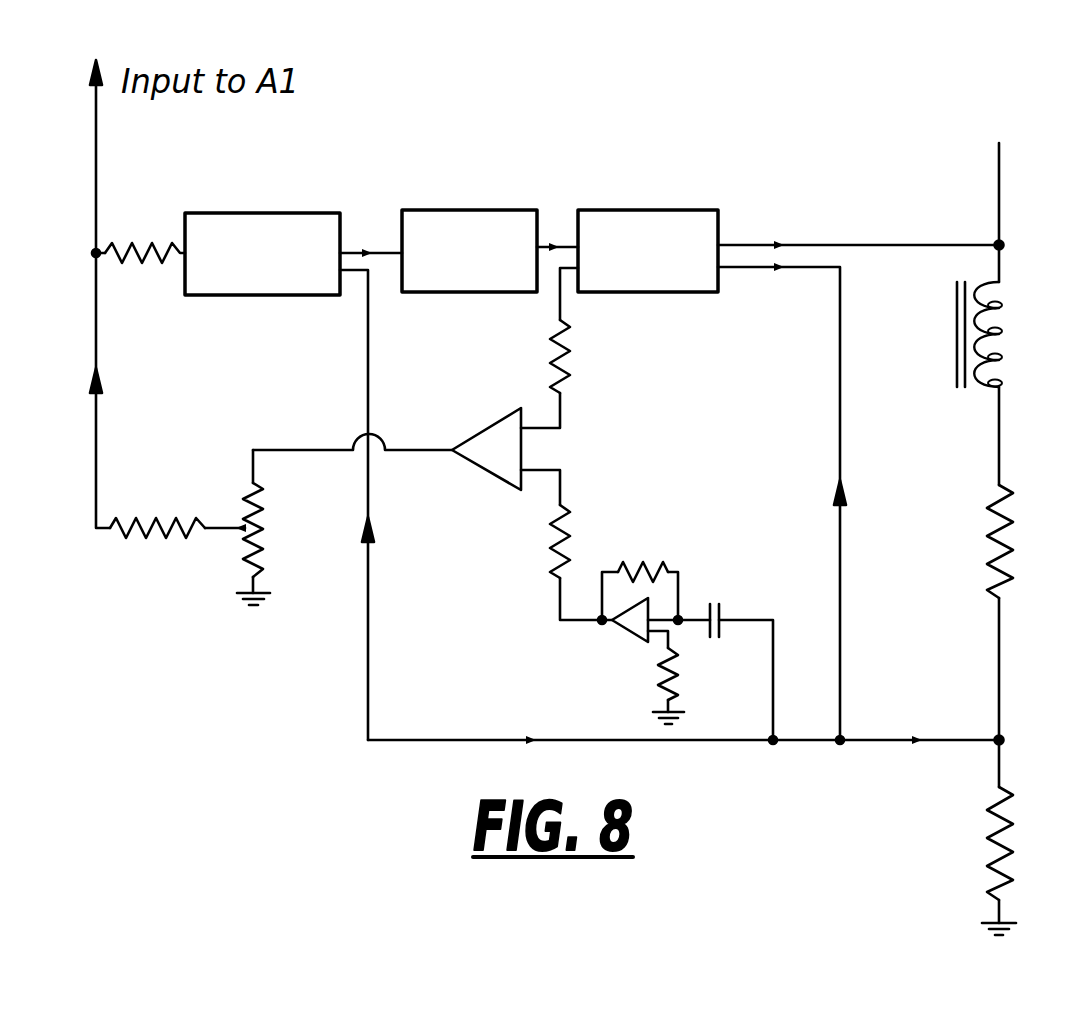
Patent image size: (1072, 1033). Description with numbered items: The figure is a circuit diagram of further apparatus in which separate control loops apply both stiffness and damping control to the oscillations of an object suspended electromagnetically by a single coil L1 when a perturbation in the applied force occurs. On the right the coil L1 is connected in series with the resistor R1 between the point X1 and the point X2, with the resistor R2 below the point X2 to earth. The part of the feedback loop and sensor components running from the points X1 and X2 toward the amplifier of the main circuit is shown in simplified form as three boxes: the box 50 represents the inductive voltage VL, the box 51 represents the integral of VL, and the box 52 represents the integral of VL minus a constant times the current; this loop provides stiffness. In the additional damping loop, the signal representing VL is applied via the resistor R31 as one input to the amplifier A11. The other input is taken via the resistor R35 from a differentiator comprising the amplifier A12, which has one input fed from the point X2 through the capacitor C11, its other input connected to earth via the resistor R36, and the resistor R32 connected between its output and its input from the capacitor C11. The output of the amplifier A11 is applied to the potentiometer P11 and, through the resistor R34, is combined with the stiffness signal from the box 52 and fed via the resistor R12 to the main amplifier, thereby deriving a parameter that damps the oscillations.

The resistor R12 is at (140, 273).
The box representing the integral of VL minus ki 52 is at (283, 295).
The box representing the integral of VL 51 is at (470, 292).
The box representing the inductive voltage VL 50 is at (640, 292).
The resistor R31 is at (569, 348).
The point X1 is at (877, 246).
The coil L1 is at (994, 334).
The amplifier A11 is at (505, 475).
The potentiometer P11 is at (273, 527).
The resistor R34 is at (177, 548).
The resistor R35 is at (552, 562).
The resistor R32 is at (640, 574).
The capacitor C11 is at (735, 654).
The amplifier A12 is at (640, 630).
The resistor R36 is at (696, 677).
The resistor R1 is at (1017, 563).
The point X2 is at (940, 743).
The resistor R2 is at (1016, 837).